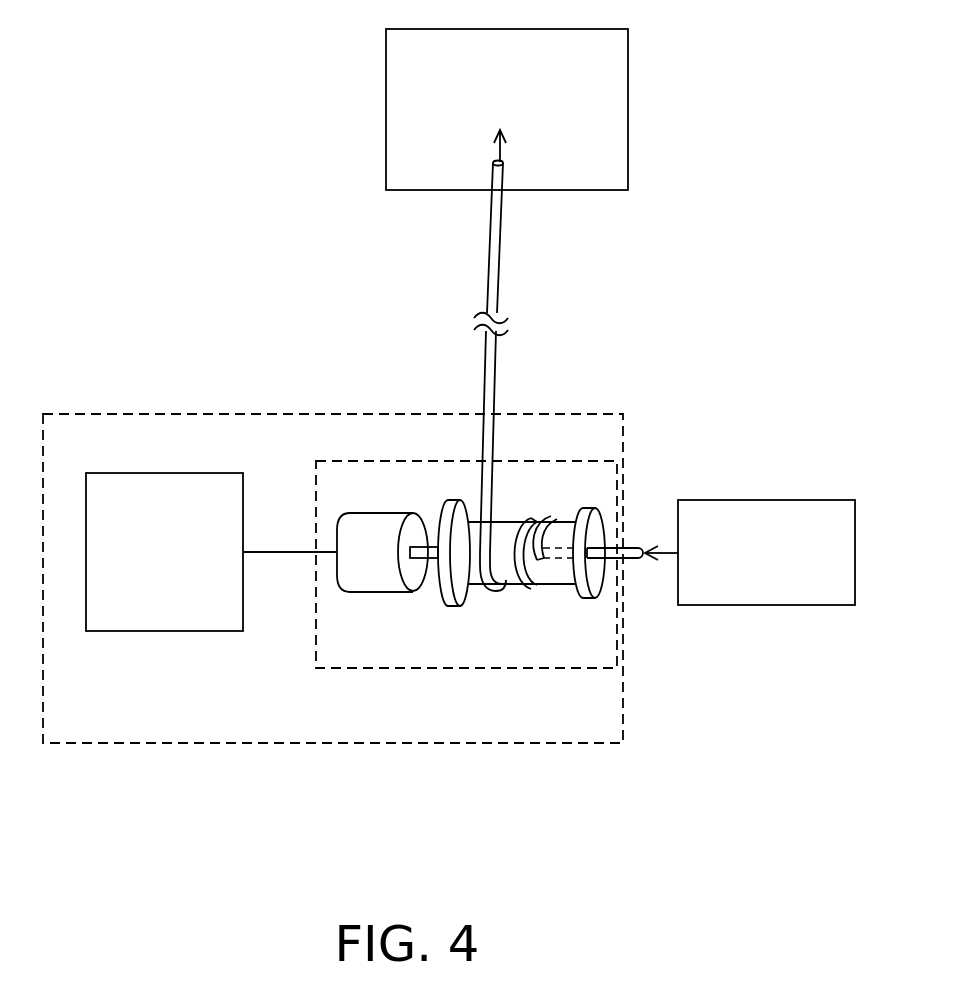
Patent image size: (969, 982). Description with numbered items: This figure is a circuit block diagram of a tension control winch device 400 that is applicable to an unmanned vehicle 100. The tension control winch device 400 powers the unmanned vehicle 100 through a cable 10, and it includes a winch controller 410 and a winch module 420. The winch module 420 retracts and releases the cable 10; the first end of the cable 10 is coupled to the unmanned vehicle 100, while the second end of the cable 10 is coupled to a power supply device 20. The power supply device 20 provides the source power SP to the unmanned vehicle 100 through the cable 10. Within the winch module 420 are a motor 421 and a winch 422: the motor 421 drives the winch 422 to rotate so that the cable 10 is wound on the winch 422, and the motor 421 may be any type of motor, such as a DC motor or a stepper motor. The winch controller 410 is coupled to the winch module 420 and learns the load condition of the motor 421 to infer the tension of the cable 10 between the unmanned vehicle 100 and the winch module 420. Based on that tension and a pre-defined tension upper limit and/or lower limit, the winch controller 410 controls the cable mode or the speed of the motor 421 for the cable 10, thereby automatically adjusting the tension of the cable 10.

The unmanned vehicle 100 is at (628, 110).
The source power SP is at (509, 151).
The cable 10 is at (502, 264).
The power supply device 20 is at (753, 500).
The tension control winch device 400 is at (202, 413).
The winch controller 410 is at (150, 631).
The winch module 420 is at (388, 668).
The motor 421 is at (385, 592).
The winch 422 is at (555, 584).